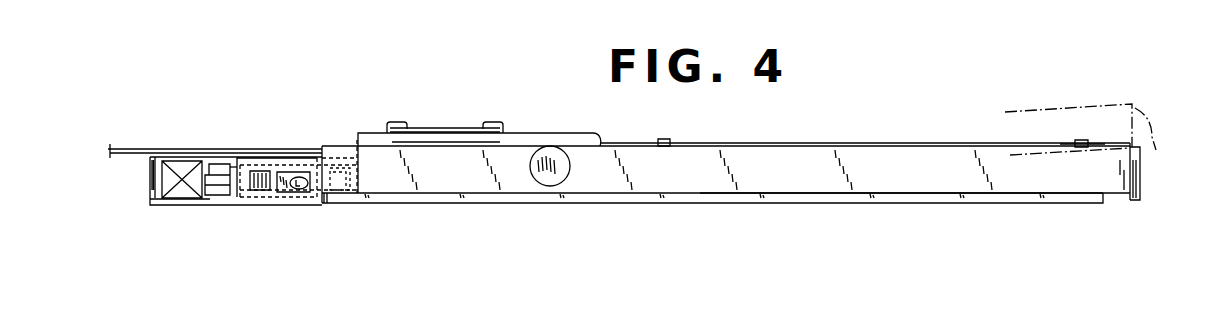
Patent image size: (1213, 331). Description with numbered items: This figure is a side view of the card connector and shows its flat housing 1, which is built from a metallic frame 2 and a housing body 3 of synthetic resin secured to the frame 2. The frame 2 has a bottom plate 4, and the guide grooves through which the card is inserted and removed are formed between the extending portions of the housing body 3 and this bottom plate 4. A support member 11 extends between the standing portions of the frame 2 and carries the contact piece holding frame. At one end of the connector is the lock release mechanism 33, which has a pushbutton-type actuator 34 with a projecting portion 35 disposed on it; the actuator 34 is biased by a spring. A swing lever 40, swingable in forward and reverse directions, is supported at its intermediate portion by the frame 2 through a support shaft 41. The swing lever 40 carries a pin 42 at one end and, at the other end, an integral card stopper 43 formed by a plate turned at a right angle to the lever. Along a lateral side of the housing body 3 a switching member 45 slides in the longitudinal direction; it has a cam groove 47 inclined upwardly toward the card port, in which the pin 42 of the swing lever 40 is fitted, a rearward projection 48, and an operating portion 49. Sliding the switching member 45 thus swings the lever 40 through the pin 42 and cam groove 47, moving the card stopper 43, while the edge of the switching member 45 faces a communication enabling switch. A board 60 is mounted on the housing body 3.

The housing 1 is at (608, 206).
The metallic frame 2 is at (762, 205).
The housing body 3 is at (151, 177).
The bottom plate 4 is at (348, 204).
The support member 11 is at (450, 130).
The lock release mechanism 33 is at (183, 200).
The pushbutton-type actuator 34 is at (183, 147).
The projecting portion 35 is at (213, 162).
The swing lever 40 is at (707, 195).
The support shaft 41 is at (552, 186).
The pin 42 is at (337, 200).
The card stopper 43 is at (1141, 152).
The switching member 45 is at (282, 193).
The cam groove 47 is at (297, 195).
The projection 48 is at (223, 163).
The operating portion 49 is at (257, 192).
The board 60 is at (295, 155).